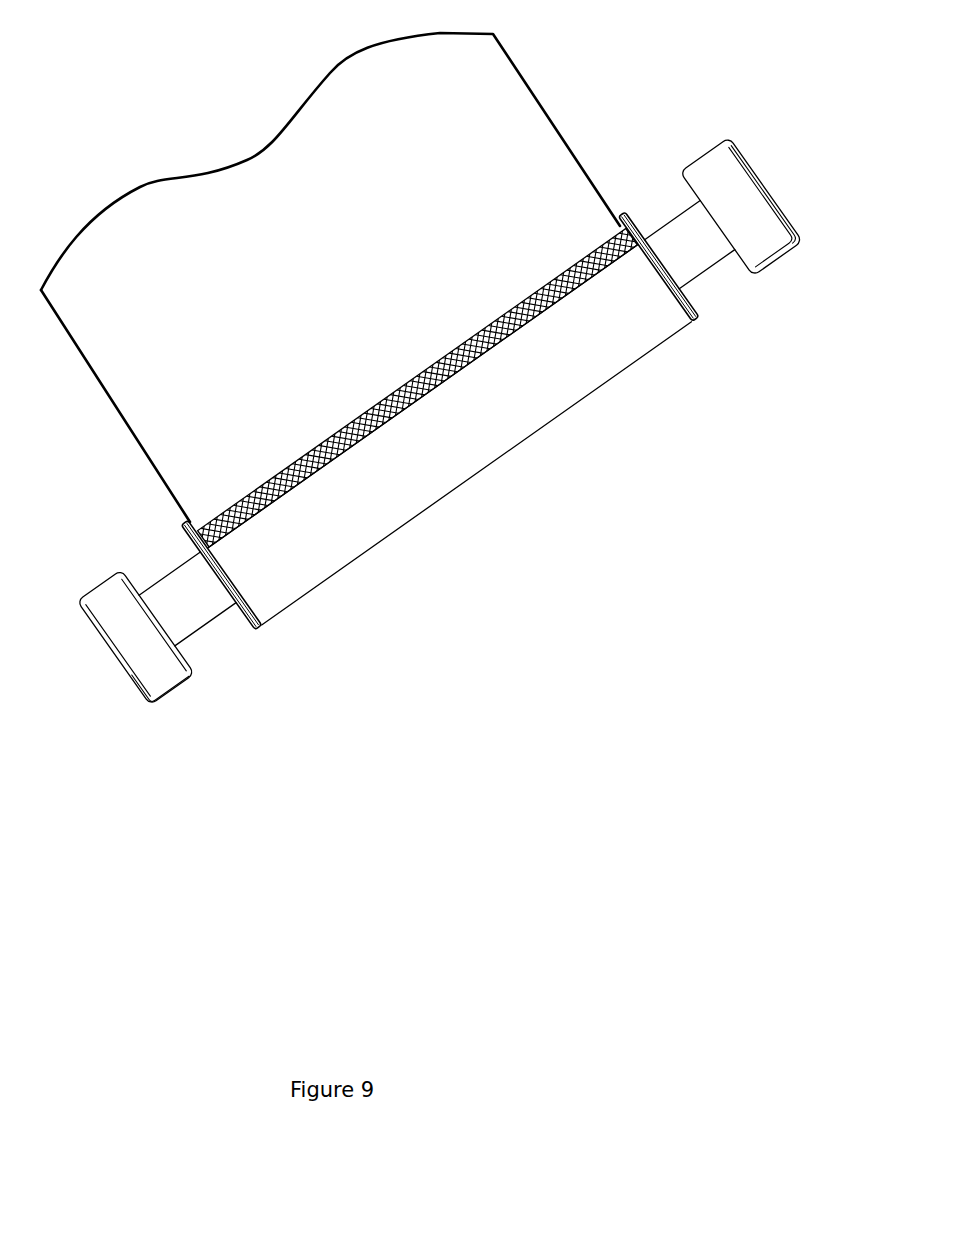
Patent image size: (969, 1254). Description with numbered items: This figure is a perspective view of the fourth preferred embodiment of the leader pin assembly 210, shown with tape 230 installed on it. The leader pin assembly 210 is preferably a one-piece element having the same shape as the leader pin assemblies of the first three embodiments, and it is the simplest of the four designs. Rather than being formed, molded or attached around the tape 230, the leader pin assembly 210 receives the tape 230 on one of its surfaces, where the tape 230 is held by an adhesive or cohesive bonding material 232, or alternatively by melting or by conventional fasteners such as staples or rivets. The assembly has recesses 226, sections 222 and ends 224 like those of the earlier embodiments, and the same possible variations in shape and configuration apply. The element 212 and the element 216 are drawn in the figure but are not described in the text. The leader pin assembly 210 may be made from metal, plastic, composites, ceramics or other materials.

The leader pin assembly 210 is at (206, 745).
The end cap 212 is at (158, 703).
The roller 216 is at (612, 380).
The sections 222 is at (707, 272).
The ends 224 is at (773, 238).
The recesses 226 is at (668, 205).
The tape 230 is at (513, 125).
The adhesive or cohesive bonding material 232 is at (415, 403).